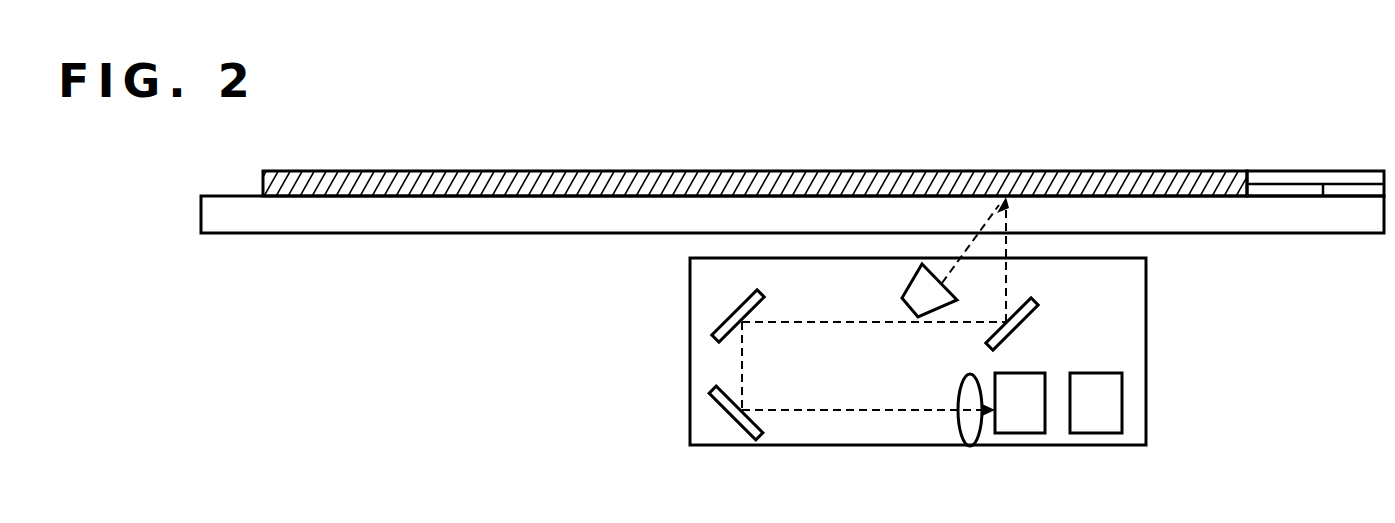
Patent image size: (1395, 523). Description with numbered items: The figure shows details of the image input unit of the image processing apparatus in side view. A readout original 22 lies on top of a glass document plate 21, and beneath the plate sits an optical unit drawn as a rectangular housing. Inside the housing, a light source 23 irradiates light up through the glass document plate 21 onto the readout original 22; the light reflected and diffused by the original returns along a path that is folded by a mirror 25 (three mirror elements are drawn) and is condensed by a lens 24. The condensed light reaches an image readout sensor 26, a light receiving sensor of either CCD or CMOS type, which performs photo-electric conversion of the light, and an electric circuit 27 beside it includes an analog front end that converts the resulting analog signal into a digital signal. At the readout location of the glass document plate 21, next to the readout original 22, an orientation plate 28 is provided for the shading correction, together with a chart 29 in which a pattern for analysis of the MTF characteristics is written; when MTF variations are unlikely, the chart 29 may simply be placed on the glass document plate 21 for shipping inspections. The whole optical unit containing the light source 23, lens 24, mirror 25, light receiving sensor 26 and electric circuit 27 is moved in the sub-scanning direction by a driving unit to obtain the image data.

The glass document plate 21 is at (358, 233).
The readout original 22 is at (383, 191).
The light source 23 is at (906, 289).
The lens 24 is at (965, 425).
The mirror 25 is at (736, 316).
The image readout sensor 26 is at (1022, 436).
The electric circuit 27 is at (1098, 436).
The orientation plate 28 is at (1283, 190).
The chart 29 is at (1359, 190).